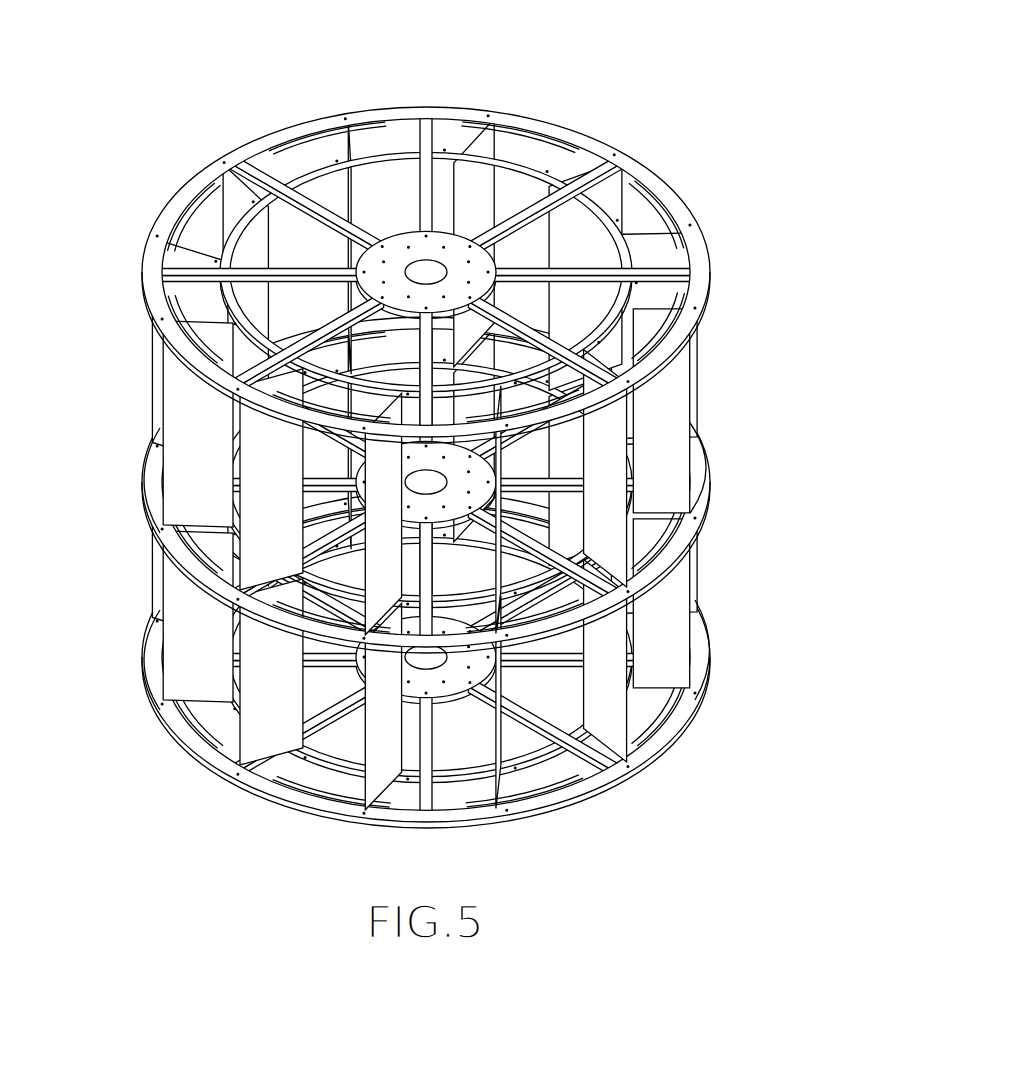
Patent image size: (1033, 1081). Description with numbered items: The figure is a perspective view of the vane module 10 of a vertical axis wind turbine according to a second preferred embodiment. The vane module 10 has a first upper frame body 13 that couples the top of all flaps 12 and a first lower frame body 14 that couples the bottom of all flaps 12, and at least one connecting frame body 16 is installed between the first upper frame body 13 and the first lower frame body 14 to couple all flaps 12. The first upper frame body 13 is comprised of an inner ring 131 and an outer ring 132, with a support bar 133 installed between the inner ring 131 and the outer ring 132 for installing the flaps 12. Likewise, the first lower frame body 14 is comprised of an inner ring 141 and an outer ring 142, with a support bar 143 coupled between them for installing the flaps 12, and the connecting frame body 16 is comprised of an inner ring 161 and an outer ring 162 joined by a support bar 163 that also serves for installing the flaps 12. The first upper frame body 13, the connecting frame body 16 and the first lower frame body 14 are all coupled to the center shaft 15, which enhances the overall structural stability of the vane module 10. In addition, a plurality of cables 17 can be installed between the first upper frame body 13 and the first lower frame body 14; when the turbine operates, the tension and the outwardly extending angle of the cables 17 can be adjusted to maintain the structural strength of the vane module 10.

The vane module 10 is at (433, 443).
The flaps 12 is at (431, 464).
The first upper frame body 13 is at (472, 244).
The inner ring 131 is at (506, 163).
The outer ring 132 is at (542, 130).
The support bar 133 is at (482, 118).
The first lower frame body 14 is at (471, 683).
The inner ring 141 is at (540, 755).
The outer ring 142 is at (467, 812).
The support bar 143 is at (246, 765).
The center shaft 15 is at (440, 565).
The connecting frame body 16 is at (431, 485).
The inner ring 161 is at (215, 565).
The outer ring 162 is at (207, 577).
The support bar 163 is at (230, 535).
The cables 17 is at (200, 362).